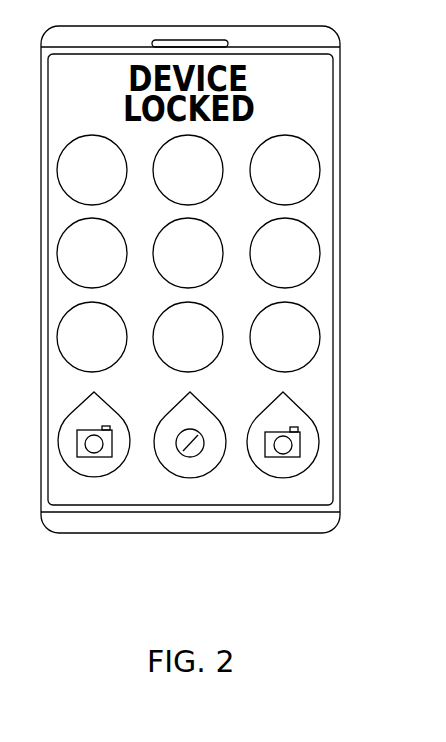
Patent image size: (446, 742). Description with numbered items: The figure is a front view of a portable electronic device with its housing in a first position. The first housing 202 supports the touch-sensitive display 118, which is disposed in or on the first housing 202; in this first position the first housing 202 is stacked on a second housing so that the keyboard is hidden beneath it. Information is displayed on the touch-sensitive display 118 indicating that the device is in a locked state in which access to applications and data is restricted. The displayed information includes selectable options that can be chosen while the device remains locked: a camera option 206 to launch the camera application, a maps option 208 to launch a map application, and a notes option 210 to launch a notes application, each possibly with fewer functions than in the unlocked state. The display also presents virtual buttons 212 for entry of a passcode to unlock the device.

The touch-sensitive display 118 is at (319, 182).
The first housing 202 is at (341, 252).
The virtual buttons 212 is at (297, 343).
The camera option 206 is at (100, 480).
The maps option 208 is at (197, 478).
The notes option 210 is at (287, 478).